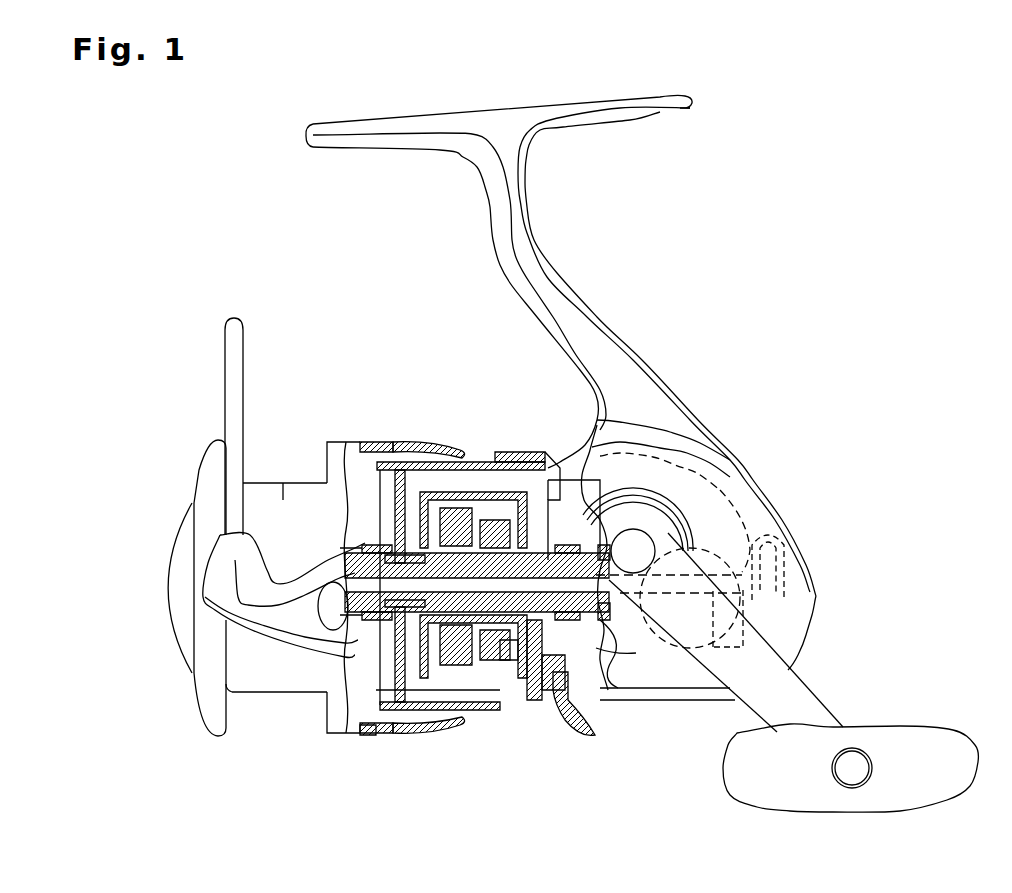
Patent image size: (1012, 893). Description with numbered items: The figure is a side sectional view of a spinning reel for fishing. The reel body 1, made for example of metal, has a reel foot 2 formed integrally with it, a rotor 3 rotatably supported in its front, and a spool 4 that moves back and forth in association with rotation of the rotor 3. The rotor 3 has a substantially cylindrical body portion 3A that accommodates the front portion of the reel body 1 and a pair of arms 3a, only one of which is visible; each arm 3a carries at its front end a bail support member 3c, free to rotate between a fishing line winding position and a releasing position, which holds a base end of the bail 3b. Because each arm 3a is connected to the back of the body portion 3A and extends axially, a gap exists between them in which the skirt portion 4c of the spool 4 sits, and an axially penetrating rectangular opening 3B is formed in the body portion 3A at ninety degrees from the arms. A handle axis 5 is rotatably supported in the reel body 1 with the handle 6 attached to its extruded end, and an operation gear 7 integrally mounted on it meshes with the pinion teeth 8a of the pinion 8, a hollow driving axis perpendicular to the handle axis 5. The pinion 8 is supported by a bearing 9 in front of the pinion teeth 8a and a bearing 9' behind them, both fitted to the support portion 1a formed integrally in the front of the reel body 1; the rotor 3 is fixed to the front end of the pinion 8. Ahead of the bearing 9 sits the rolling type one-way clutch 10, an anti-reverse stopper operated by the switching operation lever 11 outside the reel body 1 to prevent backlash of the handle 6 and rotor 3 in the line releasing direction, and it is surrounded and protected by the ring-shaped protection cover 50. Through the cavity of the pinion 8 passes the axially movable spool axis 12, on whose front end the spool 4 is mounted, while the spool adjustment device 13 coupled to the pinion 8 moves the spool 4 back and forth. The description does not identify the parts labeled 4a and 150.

The reel body 1 is at (738, 466).
The support portion 1a is at (535, 472).
The reel foot 2 is at (537, 282).
The rotor 3 is at (403, 457).
The arm 3a is at (352, 708).
The bail 3b is at (233, 347).
The bail support member 3c is at (282, 620).
The body portion 3A is at (503, 466).
The opening 3B is at (480, 508).
The spool 4 is at (340, 452).
The spool hub 4a is at (283, 500).
The skirt portion 4c is at (438, 452).
The handle axis 5 is at (634, 549).
The handle 6 is at (783, 697).
The operation gear 7 is at (654, 650).
The pinion 8 is at (522, 718).
The pinion teeth 8a is at (550, 720).
The bearing 9 is at (489, 711).
The bearing 9' is at (612, 648).
The rolling type one-way clutch 10 is at (477, 489).
The switching operation lever 11 is at (582, 733).
The spool axis 12 is at (378, 660).
The spool adjustment device 13 is at (778, 556).
The protection cover 50 is at (470, 500).
The sealing member 150 is at (335, 470).